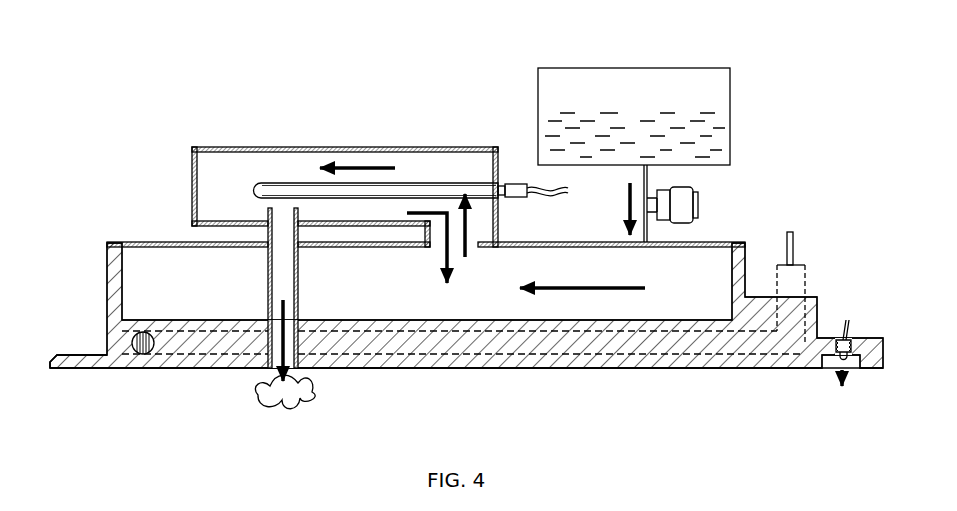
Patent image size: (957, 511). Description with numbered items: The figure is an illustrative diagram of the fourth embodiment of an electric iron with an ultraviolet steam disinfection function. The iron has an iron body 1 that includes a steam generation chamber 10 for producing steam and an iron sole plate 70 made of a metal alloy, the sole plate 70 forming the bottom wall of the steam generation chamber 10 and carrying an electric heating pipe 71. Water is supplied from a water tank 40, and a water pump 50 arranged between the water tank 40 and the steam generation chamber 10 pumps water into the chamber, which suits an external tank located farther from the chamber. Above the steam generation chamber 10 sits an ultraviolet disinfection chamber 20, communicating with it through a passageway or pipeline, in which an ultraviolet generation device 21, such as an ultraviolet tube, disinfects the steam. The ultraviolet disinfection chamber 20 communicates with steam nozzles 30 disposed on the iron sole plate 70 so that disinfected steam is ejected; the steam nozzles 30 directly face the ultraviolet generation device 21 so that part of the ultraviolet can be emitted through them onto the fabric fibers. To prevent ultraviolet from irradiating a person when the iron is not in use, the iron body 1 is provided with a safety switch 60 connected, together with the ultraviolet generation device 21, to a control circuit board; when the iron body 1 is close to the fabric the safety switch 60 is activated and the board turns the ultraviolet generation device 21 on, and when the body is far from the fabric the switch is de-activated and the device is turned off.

The iron body 1 is at (105, 103).
The steam generation chamber 10 is at (695, 268).
The ultraviolet disinfection chamber 20 is at (213, 195).
The ultraviolet generation device 21 is at (424, 178).
The steam nozzles 30 is at (273, 372).
The water tank 40 is at (565, 96).
The water pump 50 is at (703, 197).
The safety switch 60 is at (835, 363).
The iron sole plate 70 is at (497, 385).
The electric heating pipe 71 is at (797, 278).